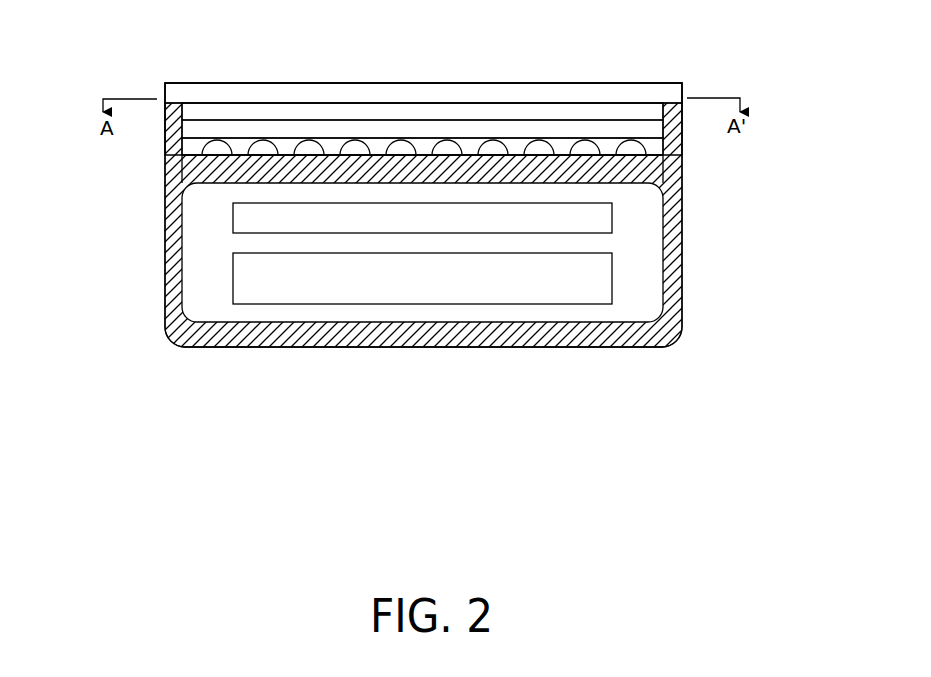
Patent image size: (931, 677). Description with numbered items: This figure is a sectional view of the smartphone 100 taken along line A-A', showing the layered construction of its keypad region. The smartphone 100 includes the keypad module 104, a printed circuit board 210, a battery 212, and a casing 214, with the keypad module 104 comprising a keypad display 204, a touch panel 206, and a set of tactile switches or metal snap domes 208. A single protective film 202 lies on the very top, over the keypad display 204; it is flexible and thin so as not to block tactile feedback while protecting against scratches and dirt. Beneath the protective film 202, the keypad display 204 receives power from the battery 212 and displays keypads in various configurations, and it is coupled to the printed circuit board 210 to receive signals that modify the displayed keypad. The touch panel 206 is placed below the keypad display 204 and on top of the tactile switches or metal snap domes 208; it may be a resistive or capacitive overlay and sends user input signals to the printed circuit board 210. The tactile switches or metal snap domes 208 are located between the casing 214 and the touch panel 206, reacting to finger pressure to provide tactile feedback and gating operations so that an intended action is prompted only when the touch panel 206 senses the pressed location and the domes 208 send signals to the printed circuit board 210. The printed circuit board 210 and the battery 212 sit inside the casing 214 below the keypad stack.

The smartphone 100 is at (146, 289).
The keypad module 104 is at (802, 45).
The protective film 202 is at (630, 95).
The keypad display 204 is at (650, 108).
The touch panel 206 is at (633, 131).
The tactile switches or metal snap domes 208 is at (633, 148).
The printed circuit board 210 is at (592, 223).
The battery 212 is at (592, 283).
The casing 214 is at (565, 338).